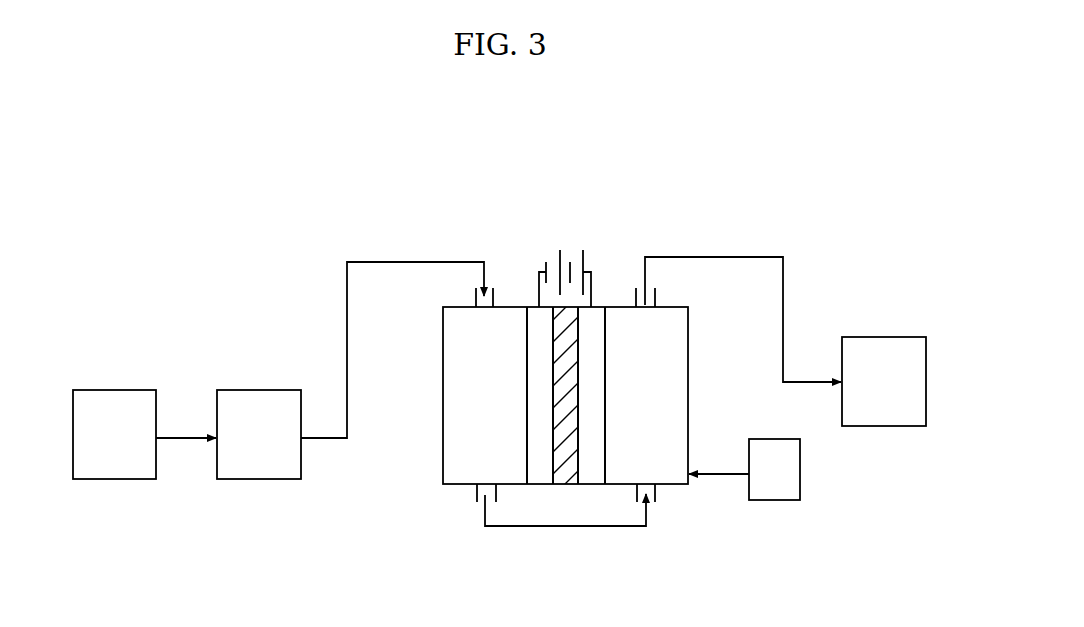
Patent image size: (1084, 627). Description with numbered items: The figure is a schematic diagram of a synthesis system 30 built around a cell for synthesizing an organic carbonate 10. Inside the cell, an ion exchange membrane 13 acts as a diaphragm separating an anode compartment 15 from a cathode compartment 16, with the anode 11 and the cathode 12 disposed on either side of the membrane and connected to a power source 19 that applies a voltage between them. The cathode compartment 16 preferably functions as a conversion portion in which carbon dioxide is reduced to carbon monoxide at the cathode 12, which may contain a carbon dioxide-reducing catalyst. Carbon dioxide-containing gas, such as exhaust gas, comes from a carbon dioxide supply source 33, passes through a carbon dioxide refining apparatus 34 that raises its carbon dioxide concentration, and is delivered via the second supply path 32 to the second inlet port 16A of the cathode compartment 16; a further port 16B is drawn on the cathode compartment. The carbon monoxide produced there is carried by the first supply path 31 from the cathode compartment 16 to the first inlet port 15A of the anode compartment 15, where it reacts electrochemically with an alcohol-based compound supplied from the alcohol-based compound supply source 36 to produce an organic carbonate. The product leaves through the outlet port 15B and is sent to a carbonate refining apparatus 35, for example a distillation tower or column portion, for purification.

The cell for synthesizing an organic carbonate 10 is at (624, 230).
The anode 11 is at (597, 323).
The cathode 12 is at (533, 328).
The ion exchange membrane 13 is at (571, 395).
The anode compartment 15 is at (672, 447).
The first inlet port 15A is at (655, 497).
The outlet port 15B is at (656, 293).
The cathode compartment 16 is at (462, 446).
The second inlet port 16A is at (476, 293).
The cathode chamber outlet 16B is at (477, 497).
The power source 19 is at (586, 250).
The synthesis system 30 is at (388, 168).
The first supply path 31 is at (633, 527).
The second supply path 32 is at (347, 316).
The carbon dioxide supply source 33 is at (120, 413).
The carbon dioxide refining apparatus 34 is at (258, 413).
The carbonate refining apparatus 35 is at (895, 408).
The alcohol-based compound supply source 36 is at (782, 486).